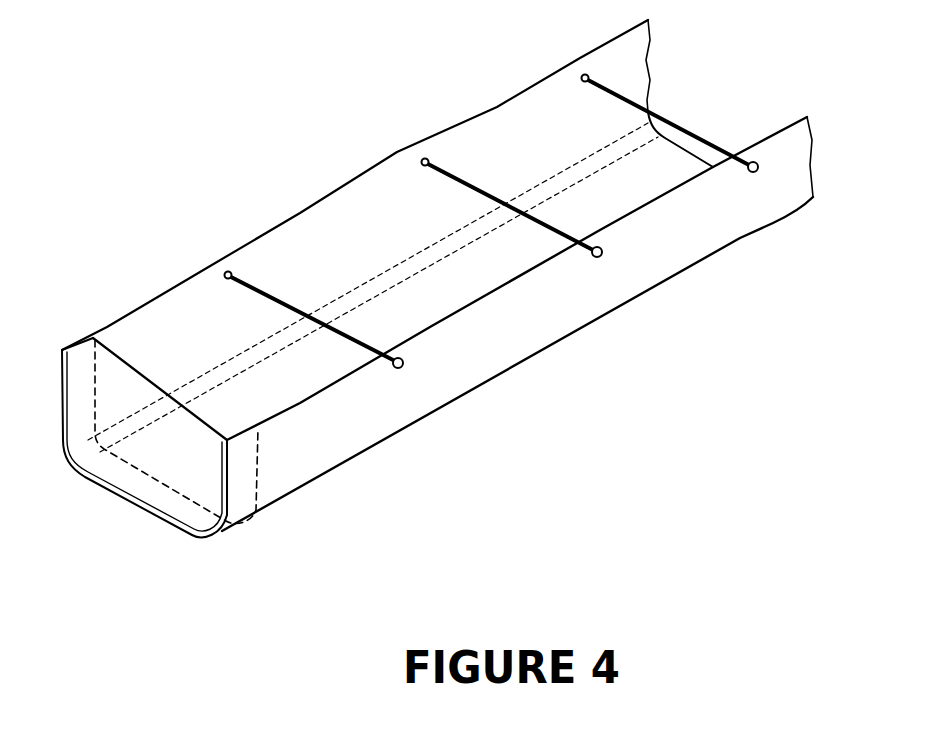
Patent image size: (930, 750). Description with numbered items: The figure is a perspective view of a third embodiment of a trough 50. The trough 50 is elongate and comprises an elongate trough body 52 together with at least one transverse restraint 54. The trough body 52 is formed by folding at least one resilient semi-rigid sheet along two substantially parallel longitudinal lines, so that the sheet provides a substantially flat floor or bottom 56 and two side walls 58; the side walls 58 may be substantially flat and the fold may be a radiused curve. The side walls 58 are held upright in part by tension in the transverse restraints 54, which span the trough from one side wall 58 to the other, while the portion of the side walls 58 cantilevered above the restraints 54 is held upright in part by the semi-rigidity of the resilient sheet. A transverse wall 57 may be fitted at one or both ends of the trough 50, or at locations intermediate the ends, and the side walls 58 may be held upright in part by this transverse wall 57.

The trough 50 is at (435, 295).
The elongate trough body 52 is at (575, 335).
The transverse restraint 54 is at (610, 92).
The floor 56 is at (230, 407).
The transverse wall 57 is at (172, 456).
The side walls 58 is at (373, 287).